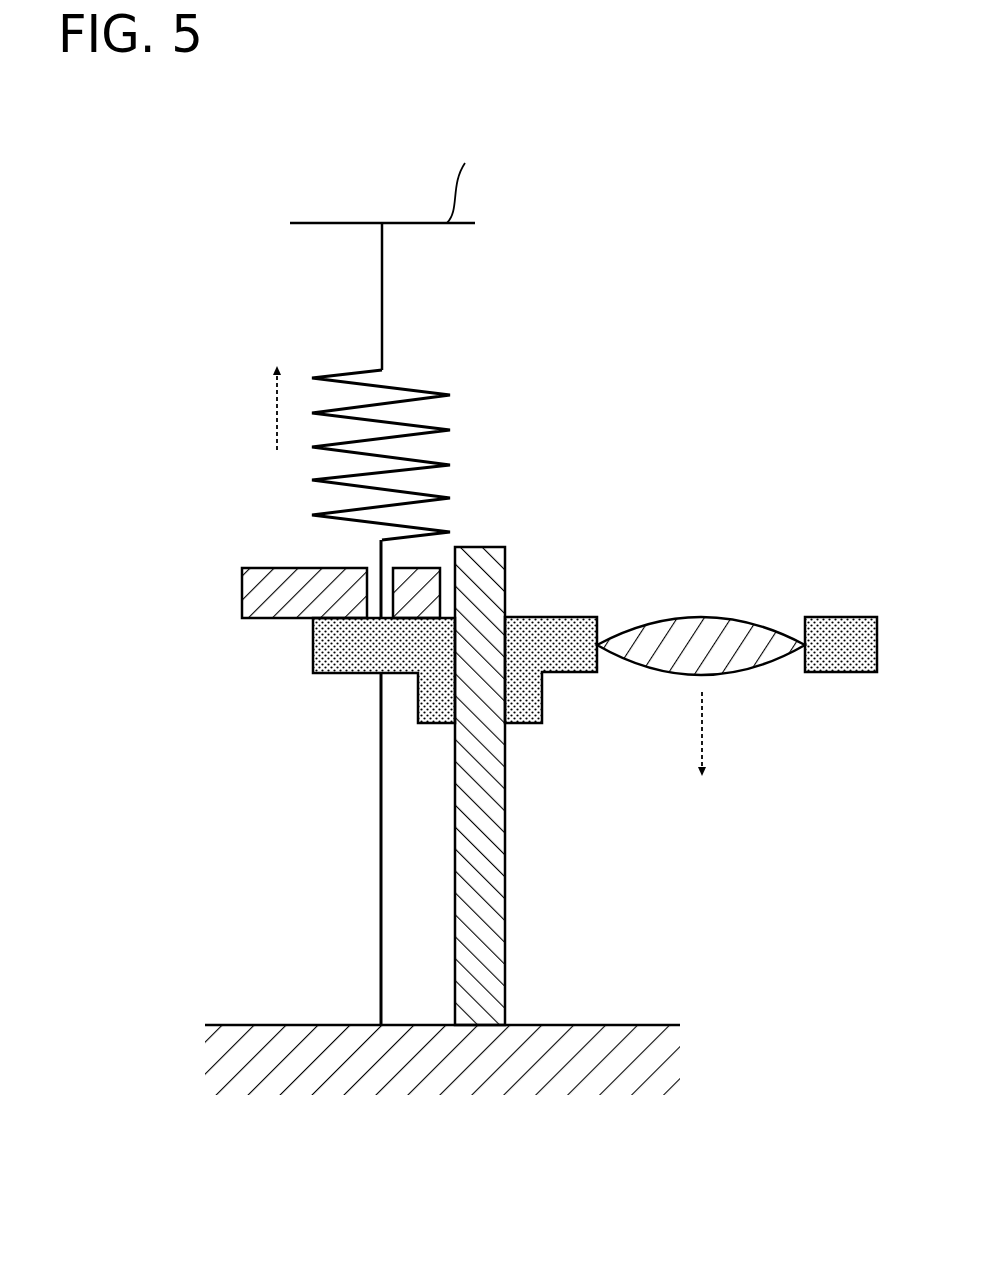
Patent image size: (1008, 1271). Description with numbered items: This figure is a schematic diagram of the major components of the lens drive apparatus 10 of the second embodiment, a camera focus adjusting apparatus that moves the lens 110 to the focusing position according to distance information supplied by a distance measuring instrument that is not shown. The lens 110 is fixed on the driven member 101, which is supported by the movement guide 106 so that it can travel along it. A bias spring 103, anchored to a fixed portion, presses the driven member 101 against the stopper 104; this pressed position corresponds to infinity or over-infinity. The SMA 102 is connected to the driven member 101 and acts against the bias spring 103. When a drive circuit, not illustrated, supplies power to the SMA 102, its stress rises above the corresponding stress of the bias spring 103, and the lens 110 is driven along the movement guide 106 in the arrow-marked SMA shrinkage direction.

The lens drive apparatus 10 is at (365, 118).
The driven member 101 is at (563, 617).
The SMA 102 is at (378, 880).
The bias spring 103 is at (452, 429).
The stopper 104 is at (242, 600).
The movement guide 106 is at (507, 916).
The lens 110 is at (705, 617).